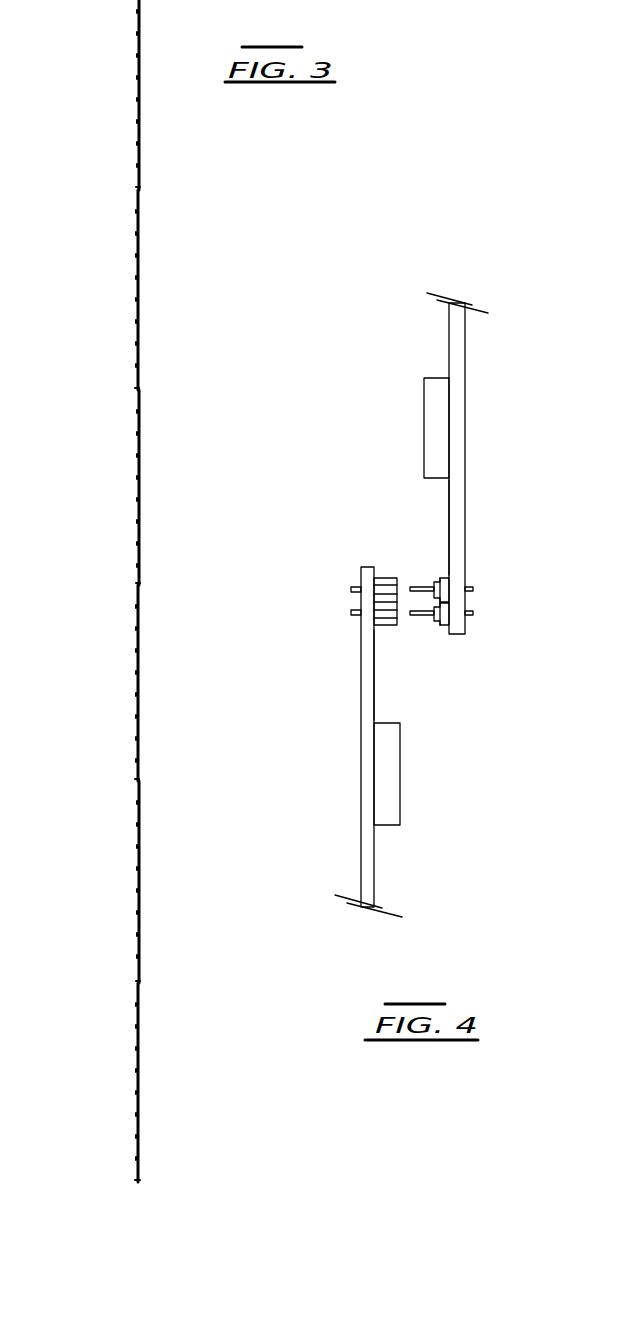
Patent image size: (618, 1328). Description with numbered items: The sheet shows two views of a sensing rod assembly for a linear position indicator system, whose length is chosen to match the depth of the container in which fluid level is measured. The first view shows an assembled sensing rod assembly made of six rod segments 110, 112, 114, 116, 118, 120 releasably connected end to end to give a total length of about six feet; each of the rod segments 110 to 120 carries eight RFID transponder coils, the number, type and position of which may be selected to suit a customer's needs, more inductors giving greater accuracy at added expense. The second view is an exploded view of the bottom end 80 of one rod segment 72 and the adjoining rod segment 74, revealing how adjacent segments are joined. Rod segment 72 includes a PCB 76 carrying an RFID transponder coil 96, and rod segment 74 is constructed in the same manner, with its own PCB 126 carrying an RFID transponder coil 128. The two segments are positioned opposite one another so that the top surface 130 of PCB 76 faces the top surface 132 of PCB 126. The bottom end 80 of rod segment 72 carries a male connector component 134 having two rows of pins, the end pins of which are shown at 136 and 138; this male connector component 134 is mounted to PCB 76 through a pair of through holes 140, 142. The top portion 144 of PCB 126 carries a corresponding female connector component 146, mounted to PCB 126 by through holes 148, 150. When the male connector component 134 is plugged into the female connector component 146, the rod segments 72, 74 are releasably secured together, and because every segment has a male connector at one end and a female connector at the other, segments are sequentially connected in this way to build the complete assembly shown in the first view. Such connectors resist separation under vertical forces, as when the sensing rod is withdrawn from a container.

In FIG. 3, the rod segment 110 is at (129, 72).
In FIG. 3, the rod segment 112 is at (126, 289).
In FIG. 3, the rod segment 114 is at (128, 514).
In FIG. 3, the rod segment 116 is at (125, 673).
In FIG. 3, the rod segment 118 is at (126, 882).
In FIG. 3, the rod segment 120 is at (126, 1051).
In FIG. 4, the rod segment 72 is at (458, 479).
In FIG. 4, the rod segment 74 is at (360, 719).
In FIG. 4, the PCB 76 is at (462, 348).
In FIG. 4, the bottom end 80 is at (469, 590).
In FIG. 4, the RFID transponder coil 96 is at (432, 418).
In FIG. 4, the PCB 126 is at (365, 691).
In FIG. 4, the RFID transponder coil 128 is at (396, 762).
In FIG. 4, the top surface 130 is at (450, 503).
In FIG. 4, the top surface 132 is at (375, 686).
In FIG. 4, the male connector component 134 is at (477, 600).
In FIG. 4, the end pin 136 is at (423, 586).
In FIG. 4, the end pin 138 is at (420, 618).
In FIG. 4, the through hole 140 is at (473, 588).
In FIG. 4, the through hole 142 is at (473, 614).
In FIG. 4, the top portion 144 is at (318, 574).
In FIG. 4, the female connector component 146 is at (384, 577).
In FIG. 4, the through hole 148 is at (351, 589).
In FIG. 4, the through hole 150 is at (351, 612).